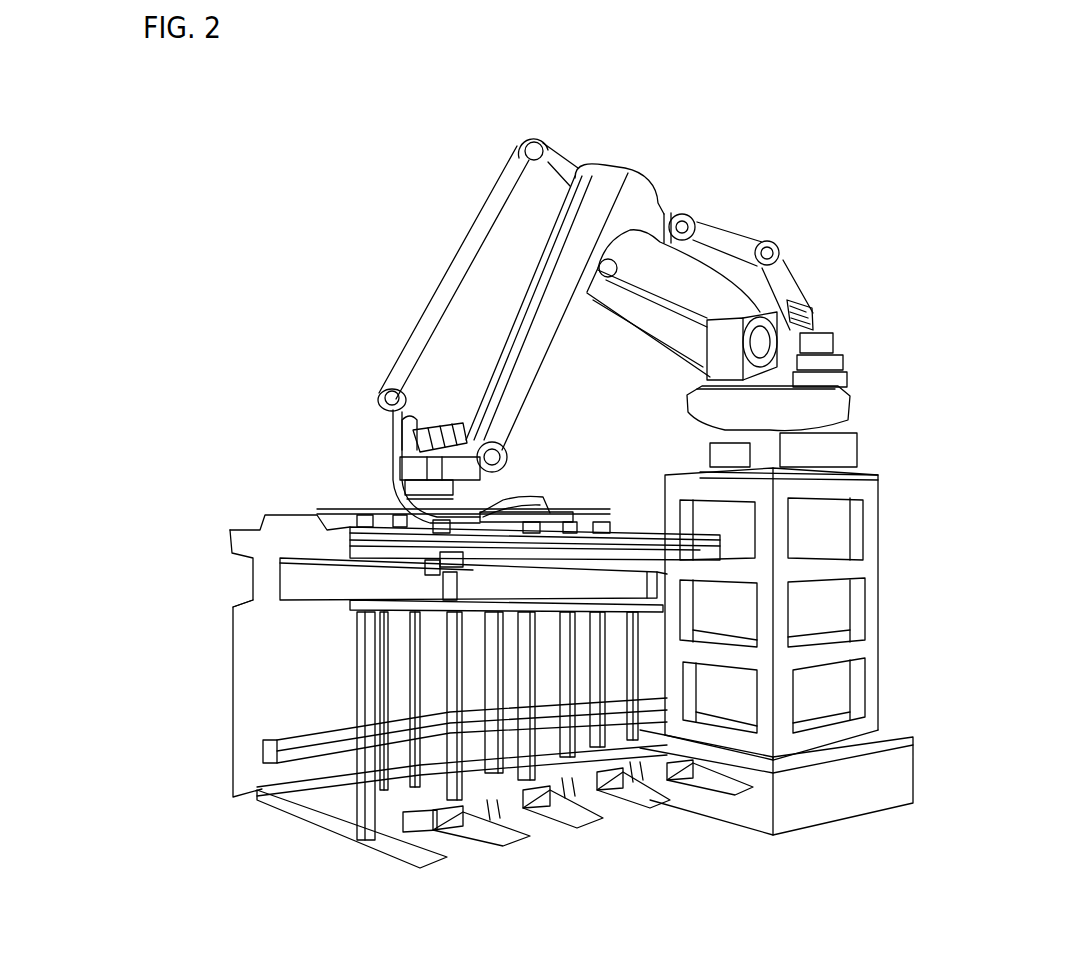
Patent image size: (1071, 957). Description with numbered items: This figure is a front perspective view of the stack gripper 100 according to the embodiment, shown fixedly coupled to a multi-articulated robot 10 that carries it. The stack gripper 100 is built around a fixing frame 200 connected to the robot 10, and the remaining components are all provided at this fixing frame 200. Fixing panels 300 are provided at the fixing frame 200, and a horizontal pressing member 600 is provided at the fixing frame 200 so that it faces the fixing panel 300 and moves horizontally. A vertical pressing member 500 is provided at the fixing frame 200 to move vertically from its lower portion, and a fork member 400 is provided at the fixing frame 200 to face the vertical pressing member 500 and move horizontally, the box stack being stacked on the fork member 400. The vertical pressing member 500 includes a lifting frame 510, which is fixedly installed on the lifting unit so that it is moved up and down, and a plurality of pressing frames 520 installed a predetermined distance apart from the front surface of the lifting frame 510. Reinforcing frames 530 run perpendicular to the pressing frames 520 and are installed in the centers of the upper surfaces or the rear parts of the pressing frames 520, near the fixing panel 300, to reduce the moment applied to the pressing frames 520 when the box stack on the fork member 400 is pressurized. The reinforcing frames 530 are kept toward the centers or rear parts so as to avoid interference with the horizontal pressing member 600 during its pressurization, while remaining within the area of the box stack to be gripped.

The multi-articulated robot 10 is at (733, 206).
The stack gripper 100 is at (220, 669).
The fixing frame 200 is at (290, 522).
The fixing panel 300 is at (243, 747).
The fork member 400 is at (348, 812).
The vertical pressing member 500 is at (340, 660).
The lifting frame 510 is at (282, 740).
The pressing frame 520 is at (313, 727).
The reinforcing frame 530 is at (362, 743).
The horizontal pressing member 600 is at (352, 782).